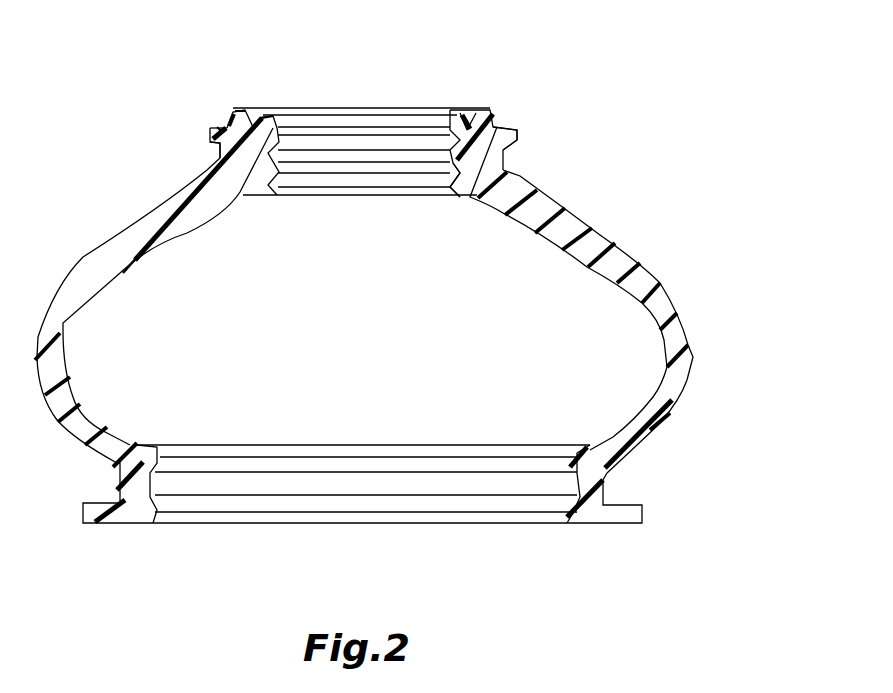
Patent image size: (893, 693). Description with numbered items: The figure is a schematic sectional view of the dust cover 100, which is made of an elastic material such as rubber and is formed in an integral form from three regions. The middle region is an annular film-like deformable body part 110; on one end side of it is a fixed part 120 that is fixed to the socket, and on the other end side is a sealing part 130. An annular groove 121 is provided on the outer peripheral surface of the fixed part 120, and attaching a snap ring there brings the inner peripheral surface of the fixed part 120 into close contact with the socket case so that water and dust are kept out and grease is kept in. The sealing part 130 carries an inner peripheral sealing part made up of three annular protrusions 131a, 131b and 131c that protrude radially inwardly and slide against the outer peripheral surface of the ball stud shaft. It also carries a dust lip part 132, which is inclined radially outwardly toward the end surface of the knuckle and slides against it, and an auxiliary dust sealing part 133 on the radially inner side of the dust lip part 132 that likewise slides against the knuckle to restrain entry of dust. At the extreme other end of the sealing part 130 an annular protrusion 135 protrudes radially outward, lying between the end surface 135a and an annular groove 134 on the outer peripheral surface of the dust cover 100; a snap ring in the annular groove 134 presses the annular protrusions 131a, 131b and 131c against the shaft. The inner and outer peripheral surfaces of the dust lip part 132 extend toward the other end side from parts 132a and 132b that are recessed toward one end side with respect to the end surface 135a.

The dust cover 100 is at (673, 170).
The body part 110 is at (613, 250).
The fixed part 120 is at (650, 467).
The annular groove 121 is at (633, 493).
The sealing part 130 is at (528, 130).
The annular protrusion 131a is at (450, 133).
The annular protrusion 131b is at (447, 167).
The annular protrusion 131c is at (445, 197).
The dust lip part 132 is at (240, 110).
The recessed part 132a is at (233, 130).
The recessed part 132b is at (257, 127).
The auxiliary dust sealing part 133 is at (467, 117).
The annular groove 134 is at (213, 157).
The annular protrusion 135 is at (210, 130).
The end surface 135a is at (217, 127).